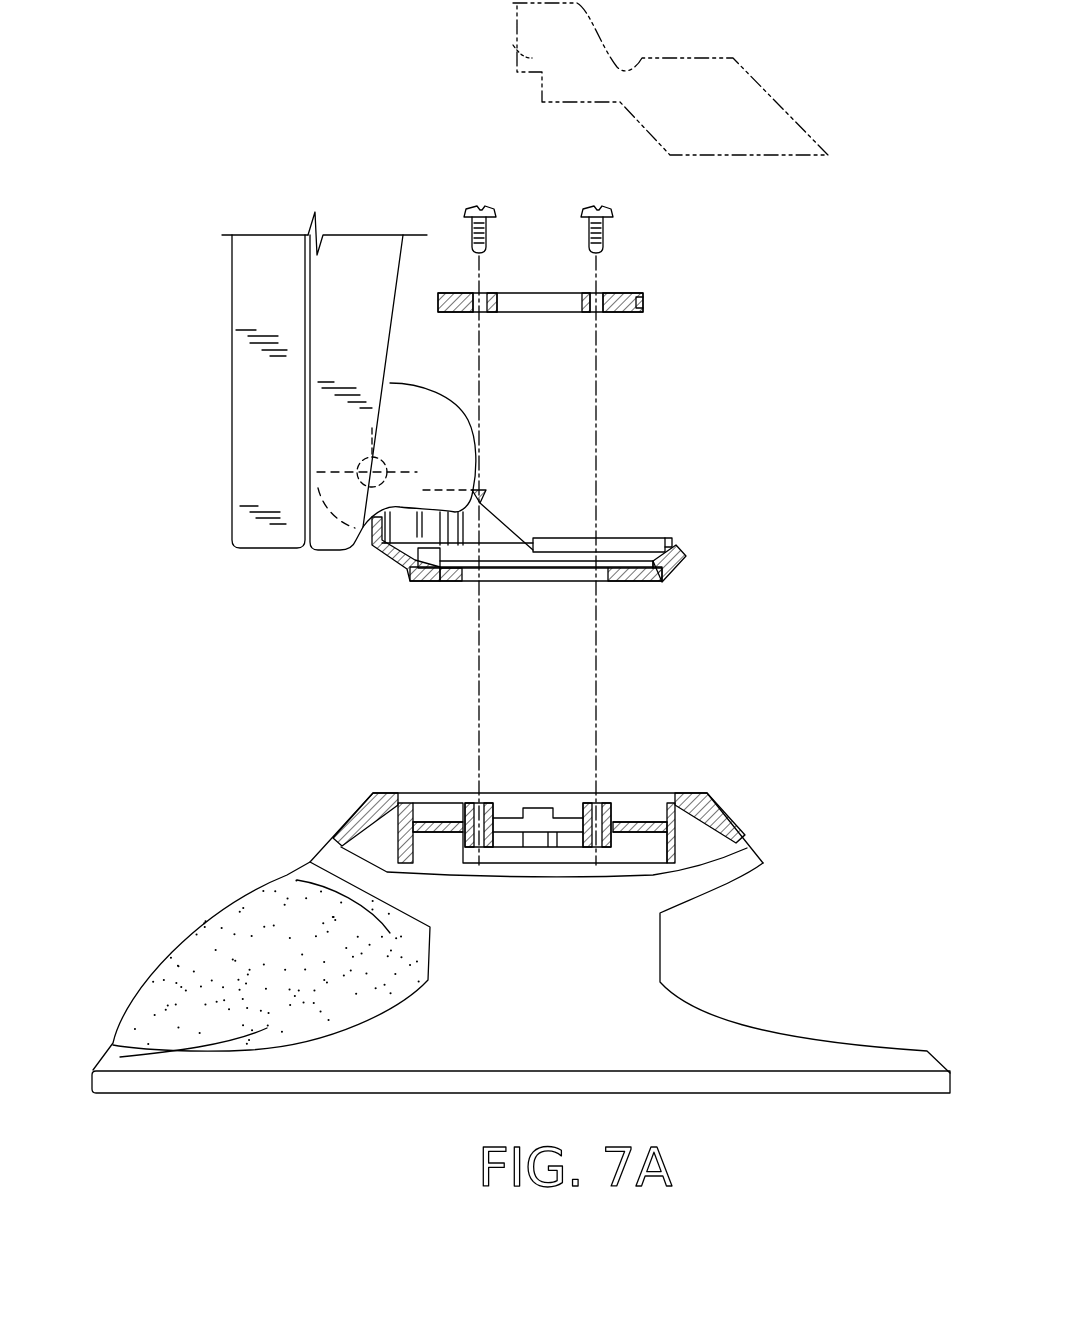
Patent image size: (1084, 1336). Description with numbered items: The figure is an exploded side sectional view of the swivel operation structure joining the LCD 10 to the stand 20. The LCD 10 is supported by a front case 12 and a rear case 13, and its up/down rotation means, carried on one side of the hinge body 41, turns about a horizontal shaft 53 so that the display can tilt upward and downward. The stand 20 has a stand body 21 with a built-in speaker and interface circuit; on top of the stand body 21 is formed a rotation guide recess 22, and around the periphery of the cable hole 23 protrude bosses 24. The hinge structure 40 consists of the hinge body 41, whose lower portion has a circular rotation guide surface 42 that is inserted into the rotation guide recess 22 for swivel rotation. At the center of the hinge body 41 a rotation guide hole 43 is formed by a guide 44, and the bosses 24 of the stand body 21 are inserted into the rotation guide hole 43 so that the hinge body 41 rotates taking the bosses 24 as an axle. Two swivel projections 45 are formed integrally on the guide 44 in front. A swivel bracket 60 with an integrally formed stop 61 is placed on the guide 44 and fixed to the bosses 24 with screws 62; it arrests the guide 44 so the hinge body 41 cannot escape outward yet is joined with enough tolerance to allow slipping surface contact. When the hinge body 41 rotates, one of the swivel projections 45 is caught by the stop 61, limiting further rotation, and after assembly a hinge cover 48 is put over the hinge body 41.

The LCD 10 is at (299, 381).
The front case 12 is at (243, 348).
The rear case 13 is at (333, 443).
The horizontal shaft 53 is at (360, 487).
The stand 20 is at (521, 908).
The stand body 21 is at (440, 1050).
The rotation guide recess 22 is at (663, 800).
The cable hole 23 is at (518, 820).
The bosses 24 is at (497, 800).
The hinge structure 40 is at (566, 533).
The hinge body 41 is at (672, 540).
The rotation guide surface 42 is at (680, 553).
The rotation guide hole 43 is at (498, 575).
The guide 44 is at (445, 581).
The swivel projections 45 is at (410, 576).
The hinge cover 48 is at (532, 58).
The swivel bracket 60 is at (551, 473).
The stop 61 is at (645, 295).
The screws 62 is at (468, 207).